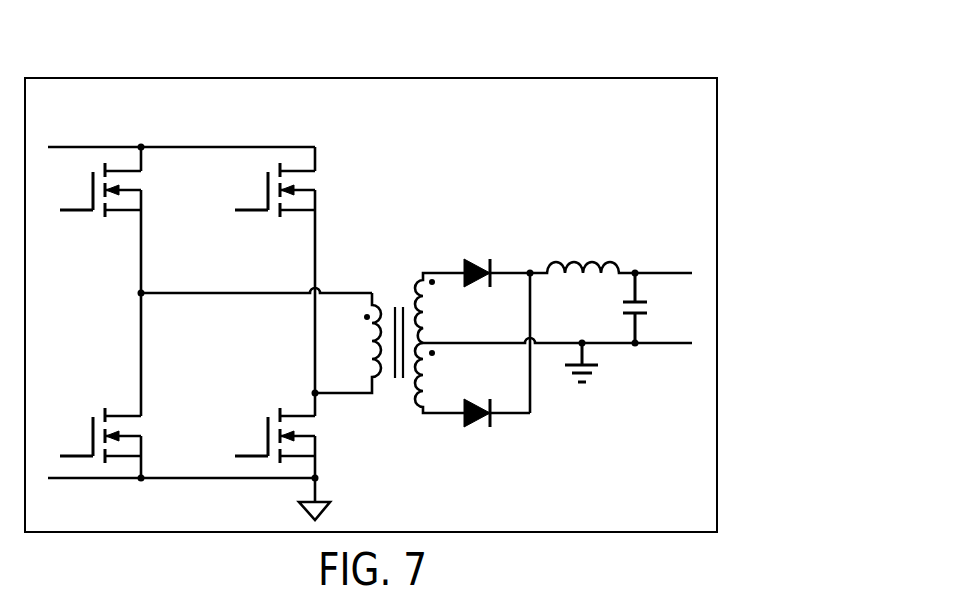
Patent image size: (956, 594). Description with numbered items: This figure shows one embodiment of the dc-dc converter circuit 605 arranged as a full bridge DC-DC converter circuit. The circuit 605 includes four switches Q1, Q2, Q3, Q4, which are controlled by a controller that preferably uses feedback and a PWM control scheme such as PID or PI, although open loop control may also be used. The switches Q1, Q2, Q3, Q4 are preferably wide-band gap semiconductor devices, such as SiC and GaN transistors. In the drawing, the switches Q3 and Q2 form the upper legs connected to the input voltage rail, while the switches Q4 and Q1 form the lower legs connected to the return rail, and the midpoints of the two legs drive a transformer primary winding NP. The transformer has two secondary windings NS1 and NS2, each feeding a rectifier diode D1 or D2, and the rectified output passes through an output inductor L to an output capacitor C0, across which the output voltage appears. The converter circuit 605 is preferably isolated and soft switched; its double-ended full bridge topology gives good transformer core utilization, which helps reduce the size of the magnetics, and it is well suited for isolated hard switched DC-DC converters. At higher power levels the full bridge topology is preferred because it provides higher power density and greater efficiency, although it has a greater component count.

The dc-dc converter circuit 605 is at (672, 55).
The switch Q1 is at (275, 435).
The switch Q2 is at (275, 190).
The switch Q3 is at (100, 190).
The switch Q4 is at (100, 435).
The transformer primary winding NP is at (348, 343).
The transformer secondary winding 1 NS1 is at (472, 308).
The transformer secondary winding 2 NS2 is at (472, 378).
The rectifier diode D1 is at (477, 259).
The rectifier diode D2 is at (477, 429).
The output inductor L is at (611, 255).
The output capacitor C0 is at (651, 308).